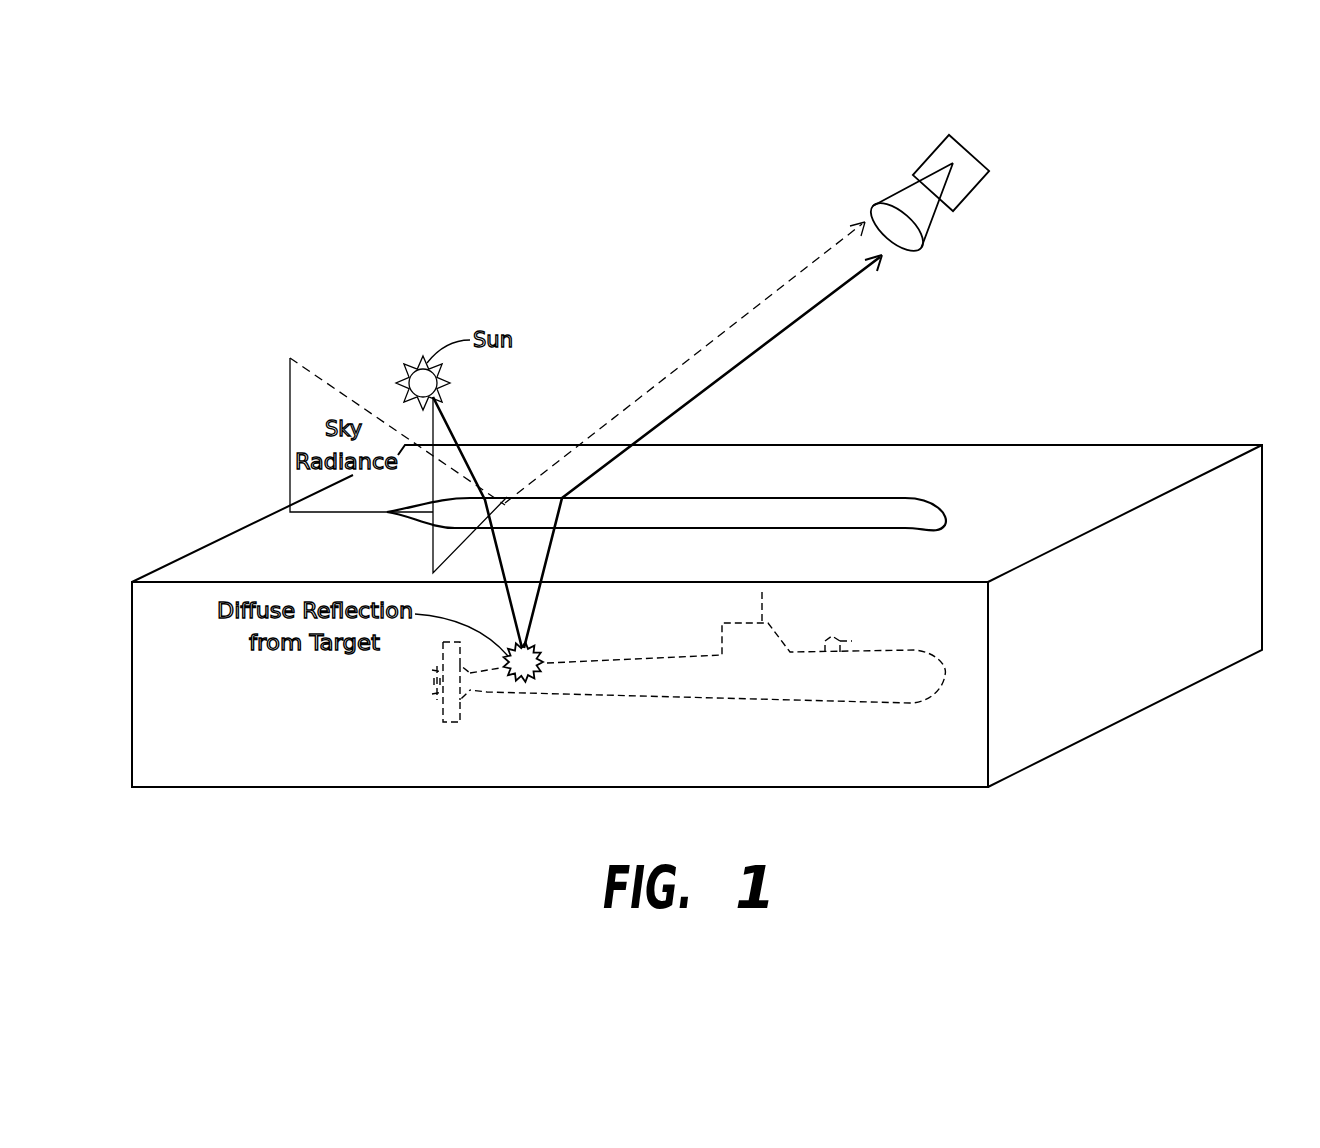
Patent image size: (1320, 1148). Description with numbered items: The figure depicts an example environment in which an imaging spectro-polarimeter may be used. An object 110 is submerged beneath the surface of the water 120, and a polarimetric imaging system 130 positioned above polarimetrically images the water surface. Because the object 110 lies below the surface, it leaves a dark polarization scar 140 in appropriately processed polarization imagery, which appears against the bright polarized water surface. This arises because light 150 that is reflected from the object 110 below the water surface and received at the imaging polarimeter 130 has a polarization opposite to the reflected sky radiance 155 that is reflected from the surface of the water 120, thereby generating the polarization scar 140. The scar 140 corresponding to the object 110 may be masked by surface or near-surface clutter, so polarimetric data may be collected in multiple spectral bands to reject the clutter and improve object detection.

The object 110 is at (763, 705).
The water 120 is at (1143, 442).
The polarimetric imaging system 130 is at (983, 162).
The polarization scar 140 is at (792, 498).
The light 150 is at (847, 285).
The reflected sky radiance 155 is at (775, 292).